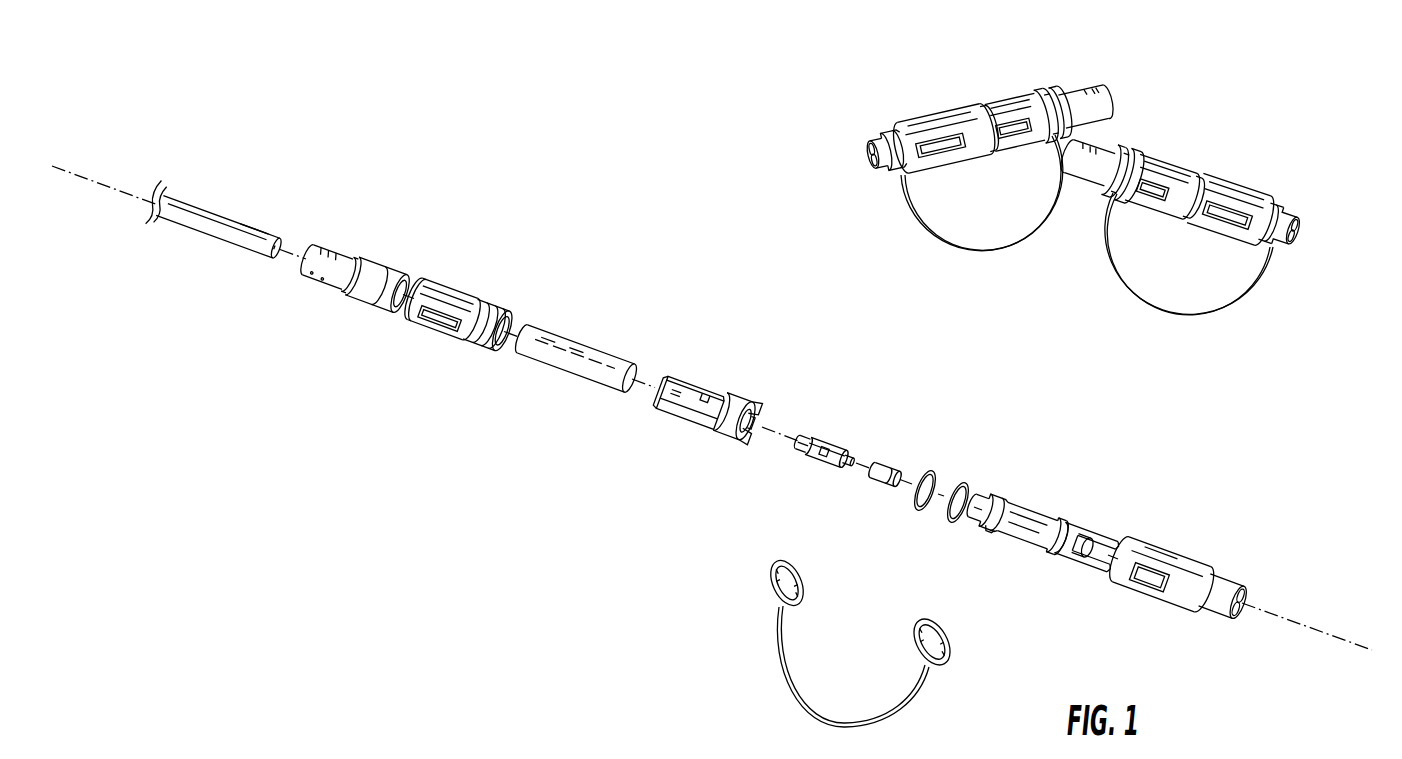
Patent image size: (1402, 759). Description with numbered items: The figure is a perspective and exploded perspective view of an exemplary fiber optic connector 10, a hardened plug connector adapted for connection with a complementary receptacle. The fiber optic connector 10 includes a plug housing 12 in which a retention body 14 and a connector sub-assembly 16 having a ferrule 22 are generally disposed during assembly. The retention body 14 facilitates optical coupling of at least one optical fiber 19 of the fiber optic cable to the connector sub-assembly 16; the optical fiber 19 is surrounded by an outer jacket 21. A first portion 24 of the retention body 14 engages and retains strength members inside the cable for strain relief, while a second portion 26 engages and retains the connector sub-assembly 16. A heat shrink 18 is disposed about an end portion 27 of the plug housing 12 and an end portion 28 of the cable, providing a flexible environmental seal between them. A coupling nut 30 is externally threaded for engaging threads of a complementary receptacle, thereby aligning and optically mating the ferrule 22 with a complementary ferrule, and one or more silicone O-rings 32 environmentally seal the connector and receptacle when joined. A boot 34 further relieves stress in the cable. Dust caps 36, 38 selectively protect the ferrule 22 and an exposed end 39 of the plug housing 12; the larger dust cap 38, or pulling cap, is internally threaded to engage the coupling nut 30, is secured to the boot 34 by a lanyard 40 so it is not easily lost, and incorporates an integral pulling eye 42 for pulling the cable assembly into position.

The fiber optic connector 10 is at (1084, 171).
The plug housing 12 is at (1053, 545).
The retention body 14 is at (710, 414).
The connector sub-assembly 16 is at (871, 446).
The heat shrink 18 is at (580, 340).
The optical fiber 19 is at (312, 218).
The outer jacket 21 is at (180, 228).
The ferrule 22 is at (852, 482).
The first portion 24 is at (669, 430).
The second portion 26 is at (720, 430).
The end portion 27 is at (986, 556).
The end portion 28 is at (256, 281).
The coupling nut 30 is at (467, 290).
The silicone O-rings 32 is at (1013, 443).
The boot 34 is at (362, 260).
The dust cap 36 is at (887, 462).
The dust cap 38 is at (1193, 550).
The exposed end 39 is at (1084, 578).
The lanyard 40 is at (922, 687).
The pulling eye 42 is at (1309, 577).